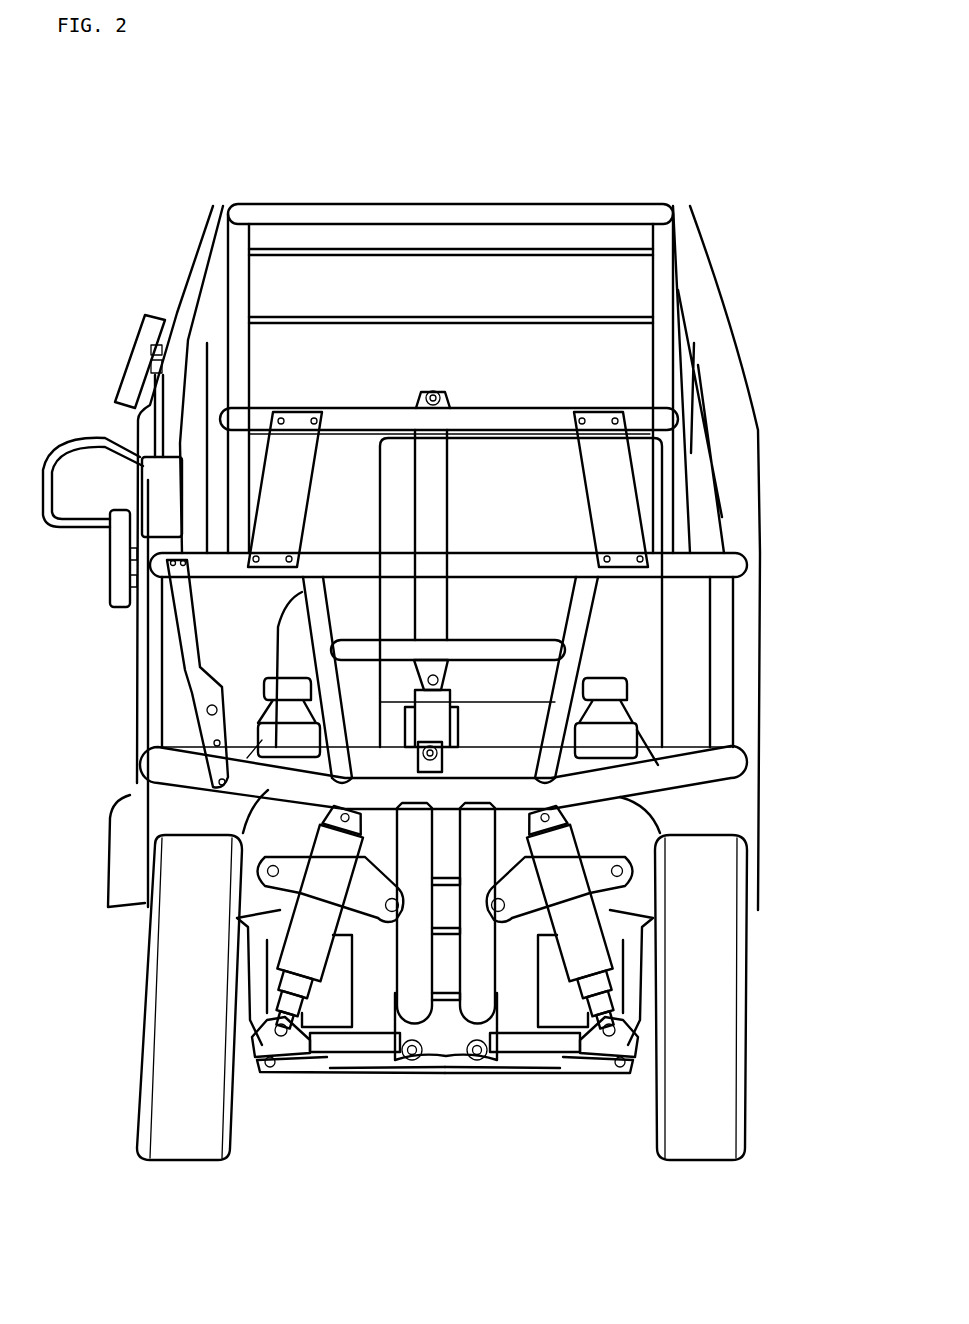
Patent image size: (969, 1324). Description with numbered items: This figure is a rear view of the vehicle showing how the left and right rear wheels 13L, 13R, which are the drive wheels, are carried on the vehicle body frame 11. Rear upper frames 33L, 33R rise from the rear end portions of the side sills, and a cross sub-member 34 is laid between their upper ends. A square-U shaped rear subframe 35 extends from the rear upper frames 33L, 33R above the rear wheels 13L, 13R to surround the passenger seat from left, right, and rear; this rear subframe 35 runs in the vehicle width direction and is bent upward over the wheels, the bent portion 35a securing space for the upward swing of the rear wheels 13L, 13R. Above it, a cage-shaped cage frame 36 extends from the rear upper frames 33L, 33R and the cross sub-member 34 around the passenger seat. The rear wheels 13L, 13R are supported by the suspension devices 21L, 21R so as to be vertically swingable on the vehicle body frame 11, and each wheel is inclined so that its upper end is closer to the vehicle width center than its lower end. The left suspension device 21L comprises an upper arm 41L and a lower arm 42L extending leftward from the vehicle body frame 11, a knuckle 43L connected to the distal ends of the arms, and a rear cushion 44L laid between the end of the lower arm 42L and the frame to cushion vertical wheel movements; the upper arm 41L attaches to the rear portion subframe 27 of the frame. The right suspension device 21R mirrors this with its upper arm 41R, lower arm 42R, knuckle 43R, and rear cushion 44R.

The vehicle body frame 11 is at (762, 750).
The left rear wheel 13L is at (148, 1033).
The right rear wheel 13R is at (712, 1040).
The left suspension device 21L is at (322, 1092).
The right suspension device 21R is at (598, 1092).
The rear portion subframe 27 is at (413, 1000).
The left rear upper frame 33L is at (147, 680).
The right rear upper frame 33R is at (745, 685).
The cross sub-member 34 is at (433, 230).
The rear subframe 35 is at (448, 795).
The bent portion 35a is at (268, 791).
The cage frame 36 is at (668, 568).
The left upper arm 41L is at (371, 893).
The right upper arm 41R is at (521, 893).
The left lower arm 42L is at (350, 1055).
The right lower arm 42R is at (560, 1055).
The left knuckle 43L is at (245, 1040).
The right knuckle 43R is at (637, 1040).
The left rear cushion 44L is at (307, 940).
The right rear cushion 44R is at (580, 910).